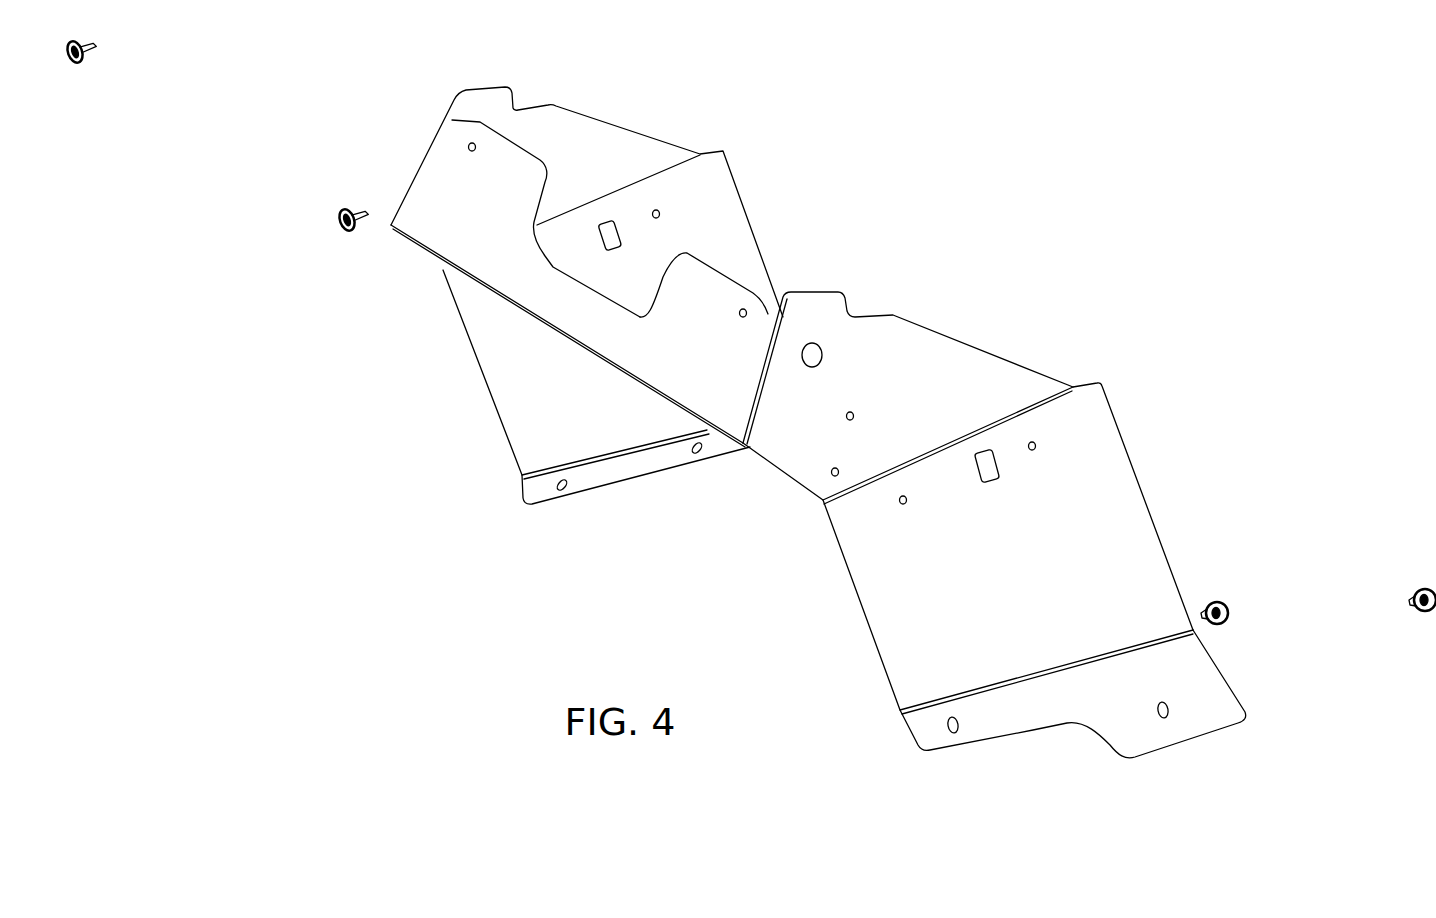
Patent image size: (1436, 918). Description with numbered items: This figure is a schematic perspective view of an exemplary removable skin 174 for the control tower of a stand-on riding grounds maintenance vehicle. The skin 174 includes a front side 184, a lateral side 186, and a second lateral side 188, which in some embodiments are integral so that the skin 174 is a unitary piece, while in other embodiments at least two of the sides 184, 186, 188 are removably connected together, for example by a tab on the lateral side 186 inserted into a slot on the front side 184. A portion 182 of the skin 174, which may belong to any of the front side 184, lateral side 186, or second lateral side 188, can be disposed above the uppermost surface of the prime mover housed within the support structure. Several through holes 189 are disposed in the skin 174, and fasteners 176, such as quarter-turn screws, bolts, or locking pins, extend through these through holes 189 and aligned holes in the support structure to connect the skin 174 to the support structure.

The removable skin 174 is at (806, 190).
The fastener 176 is at (77, 67).
The portion of the skin 182 is at (693, 280).
The front side 184 is at (435, 180).
The lateral side 186 is at (968, 357).
The second lateral side 188 is at (512, 388).
The through hole 189 is at (476, 148).